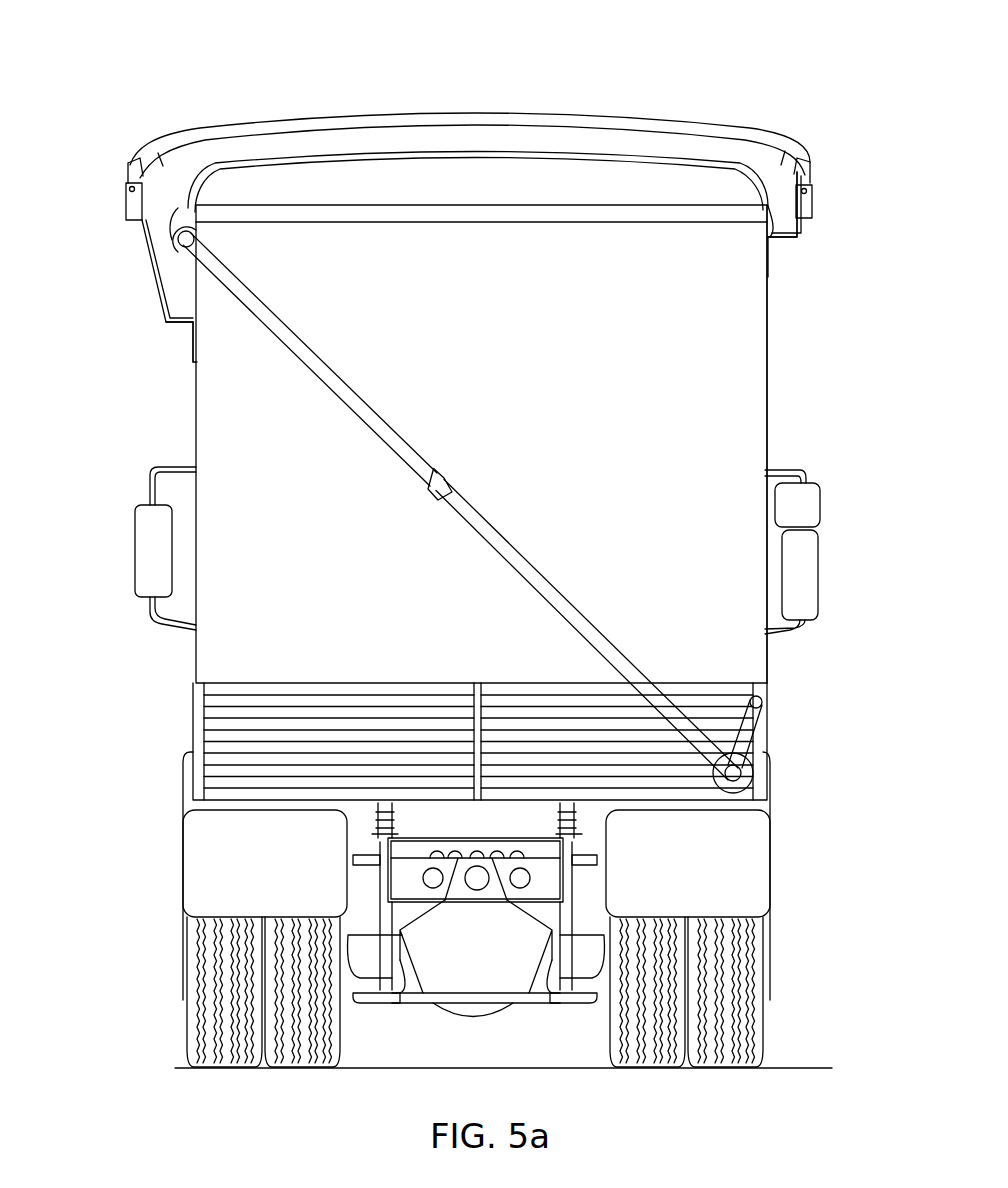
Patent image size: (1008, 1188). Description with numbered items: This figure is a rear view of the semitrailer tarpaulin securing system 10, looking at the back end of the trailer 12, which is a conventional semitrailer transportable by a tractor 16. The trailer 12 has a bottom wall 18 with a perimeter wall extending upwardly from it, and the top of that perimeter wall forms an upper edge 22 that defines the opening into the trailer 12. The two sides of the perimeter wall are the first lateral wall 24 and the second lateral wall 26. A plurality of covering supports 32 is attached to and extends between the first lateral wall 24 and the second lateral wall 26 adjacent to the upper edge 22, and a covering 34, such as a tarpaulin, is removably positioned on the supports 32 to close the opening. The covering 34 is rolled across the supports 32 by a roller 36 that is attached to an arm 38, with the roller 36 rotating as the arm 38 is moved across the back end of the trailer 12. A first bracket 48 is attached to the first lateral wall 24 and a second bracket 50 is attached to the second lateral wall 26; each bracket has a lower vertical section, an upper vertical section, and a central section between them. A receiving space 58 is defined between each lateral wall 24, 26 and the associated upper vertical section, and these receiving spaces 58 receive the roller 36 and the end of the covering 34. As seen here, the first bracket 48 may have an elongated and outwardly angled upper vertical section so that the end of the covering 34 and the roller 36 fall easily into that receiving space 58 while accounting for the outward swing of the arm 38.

The semitrailer tarpaulin securing system 10 is at (95, 128).
The trailer 12 is at (190, 788).
The tractor 16 is at (770, 482).
The bottom wall 18 is at (508, 801).
The upper edge 22 is at (540, 205).
The first lateral wall 24 is at (194, 404).
The second lateral wall 26 is at (768, 352).
The covering supports 32 is at (445, 165).
The covering 34 is at (187, 200).
The roller 36 is at (172, 238).
The arm 38 is at (392, 432).
The first bracket 48 is at (165, 326).
The second bracket 50 is at (800, 240).
The receiving space 58 is at (183, 278).